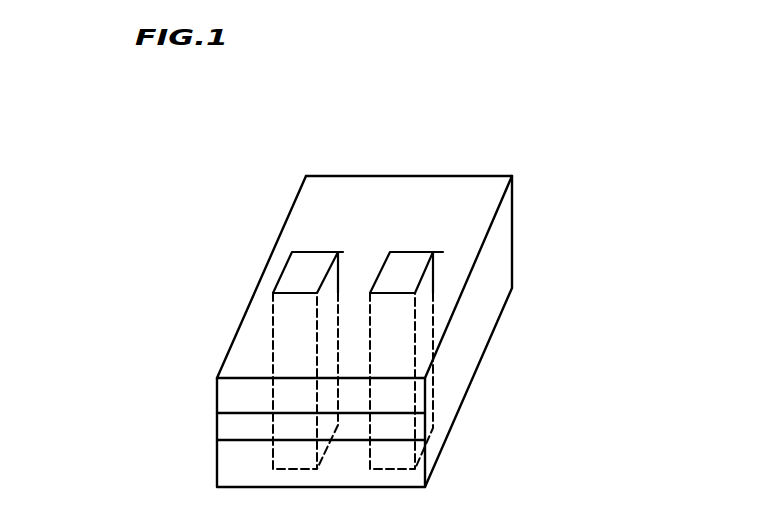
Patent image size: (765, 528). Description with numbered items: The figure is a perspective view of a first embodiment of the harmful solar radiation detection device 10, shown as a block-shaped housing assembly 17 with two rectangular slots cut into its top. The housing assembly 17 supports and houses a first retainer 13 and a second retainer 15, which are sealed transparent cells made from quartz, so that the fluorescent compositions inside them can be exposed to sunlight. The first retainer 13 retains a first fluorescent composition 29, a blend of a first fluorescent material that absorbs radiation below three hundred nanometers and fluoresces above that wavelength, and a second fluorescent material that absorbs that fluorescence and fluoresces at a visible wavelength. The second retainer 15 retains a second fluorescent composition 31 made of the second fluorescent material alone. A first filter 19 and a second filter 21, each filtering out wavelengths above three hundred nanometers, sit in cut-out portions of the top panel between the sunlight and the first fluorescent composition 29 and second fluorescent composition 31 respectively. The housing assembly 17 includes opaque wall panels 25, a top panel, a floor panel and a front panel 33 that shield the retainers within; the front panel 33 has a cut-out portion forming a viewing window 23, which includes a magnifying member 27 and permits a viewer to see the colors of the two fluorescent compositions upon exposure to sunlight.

The block assembly 10 is at (560, 152).
The first retainer 13 is at (273, 340).
The second retainer 15 is at (417, 317).
The housing assembly 17 is at (455, 180).
The first filter 19 is at (308, 271).
The second filter 21 is at (408, 263).
The viewing window 23 is at (212, 424).
The opaque wall panels 25 is at (458, 396).
The magnifying member 27 is at (228, 425).
The first fluorescent composition 29 is at (362, 198).
The second fluorescent composition 31 is at (395, 347).
The front panel 33 is at (237, 390).